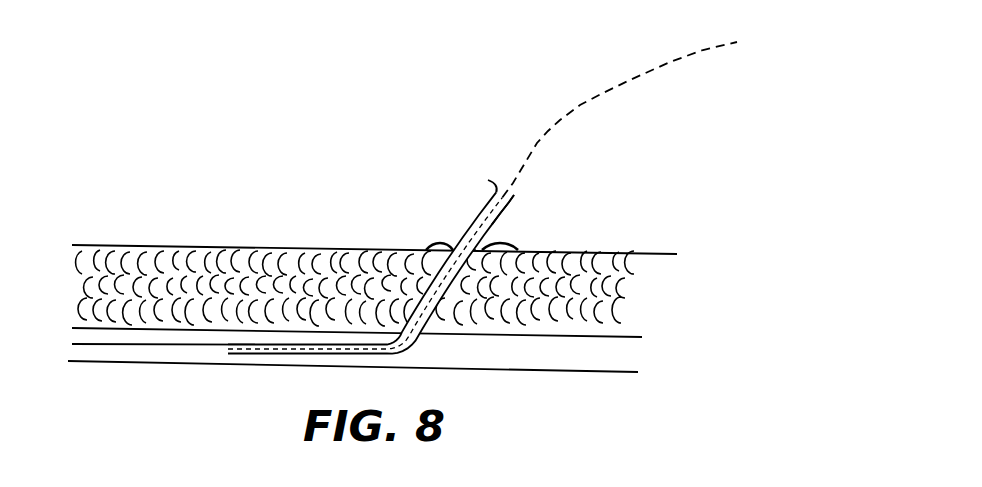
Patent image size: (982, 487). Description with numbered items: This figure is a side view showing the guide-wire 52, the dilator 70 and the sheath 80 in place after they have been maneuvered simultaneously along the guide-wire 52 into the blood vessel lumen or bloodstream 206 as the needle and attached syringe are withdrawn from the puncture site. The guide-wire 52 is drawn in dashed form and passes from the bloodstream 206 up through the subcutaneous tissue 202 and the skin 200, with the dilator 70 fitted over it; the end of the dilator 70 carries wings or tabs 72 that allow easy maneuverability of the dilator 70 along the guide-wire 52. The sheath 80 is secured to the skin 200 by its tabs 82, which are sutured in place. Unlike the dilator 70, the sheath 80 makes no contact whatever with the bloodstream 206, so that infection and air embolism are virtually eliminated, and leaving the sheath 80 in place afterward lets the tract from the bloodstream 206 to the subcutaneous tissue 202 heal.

The guide-wire 52 is at (607, 96).
The dilator 70 is at (424, 322).
The wings or tabs 72 is at (514, 195).
The sheath 80 is at (430, 279).
The tabs 82 is at (507, 243).
The skin 200 is at (338, 250).
The subcutaneous tissue 202 is at (572, 312).
The bloodstream 206 is at (567, 362).